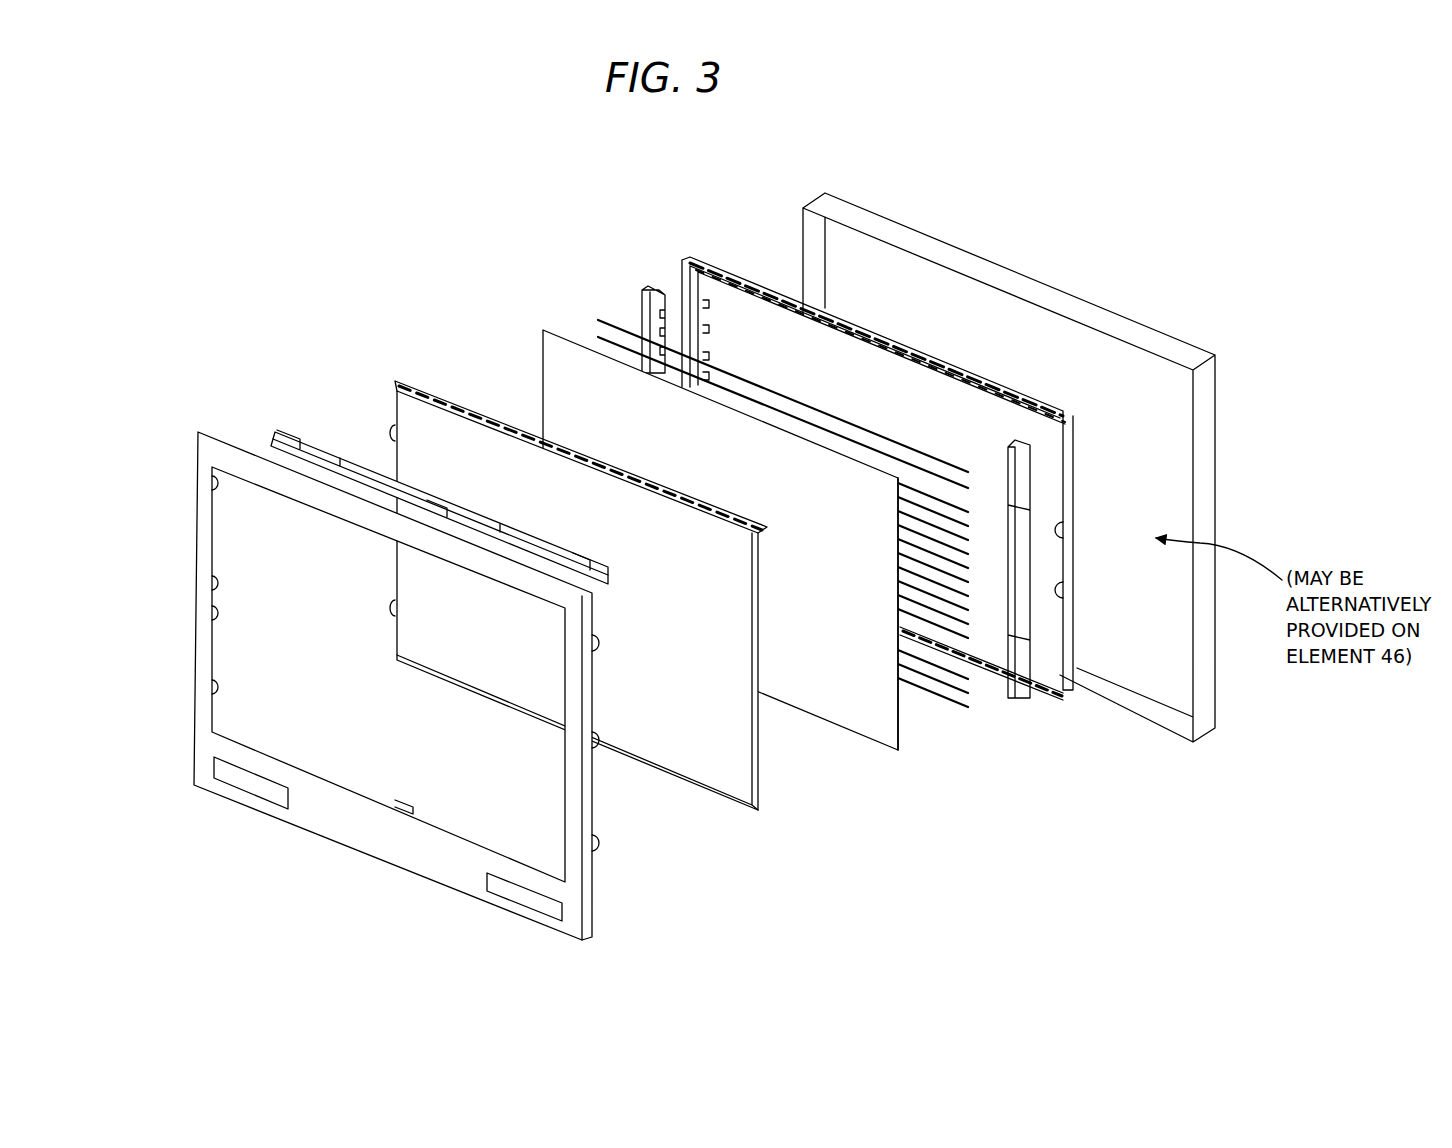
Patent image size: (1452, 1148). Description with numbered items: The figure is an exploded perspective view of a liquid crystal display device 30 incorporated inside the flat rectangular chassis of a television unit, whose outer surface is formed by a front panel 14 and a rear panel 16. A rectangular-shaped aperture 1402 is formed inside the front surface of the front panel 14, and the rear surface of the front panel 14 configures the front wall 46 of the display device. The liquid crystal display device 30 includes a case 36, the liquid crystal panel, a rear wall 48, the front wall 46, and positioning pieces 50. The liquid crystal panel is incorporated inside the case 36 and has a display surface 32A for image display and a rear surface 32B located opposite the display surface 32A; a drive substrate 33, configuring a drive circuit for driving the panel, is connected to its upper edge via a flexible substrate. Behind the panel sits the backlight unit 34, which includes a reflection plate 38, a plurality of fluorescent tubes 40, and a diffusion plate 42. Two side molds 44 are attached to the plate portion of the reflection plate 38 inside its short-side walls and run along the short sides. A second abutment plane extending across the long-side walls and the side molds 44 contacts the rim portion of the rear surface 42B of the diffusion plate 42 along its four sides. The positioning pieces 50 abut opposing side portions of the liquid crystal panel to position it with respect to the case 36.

The front panel 14 is at (353, 690).
The rear panel 16 is at (1021, 279).
The liquid crystal display device 30 is at (330, 252).
The display surface 32A is at (619, 606).
The rear surface 32B is at (759, 772).
The drive substrate 33 is at (487, 418).
The backlight unit 34 is at (872, 527).
The case 36 is at (390, 886).
The reflection plate 38 is at (892, 332).
The fluorescent tubes 40 is at (975, 700).
The diffusion plate 42 is at (766, 546).
The rear surface of the diffusion plate 42B is at (898, 725).
The side molds 44 is at (1030, 700).
The front wall 46 is at (233, 442).
The rear wall 48 is at (914, 439).
The positioning piece 50 is at (1073, 550).
The aperture 1402 is at (215, 623).